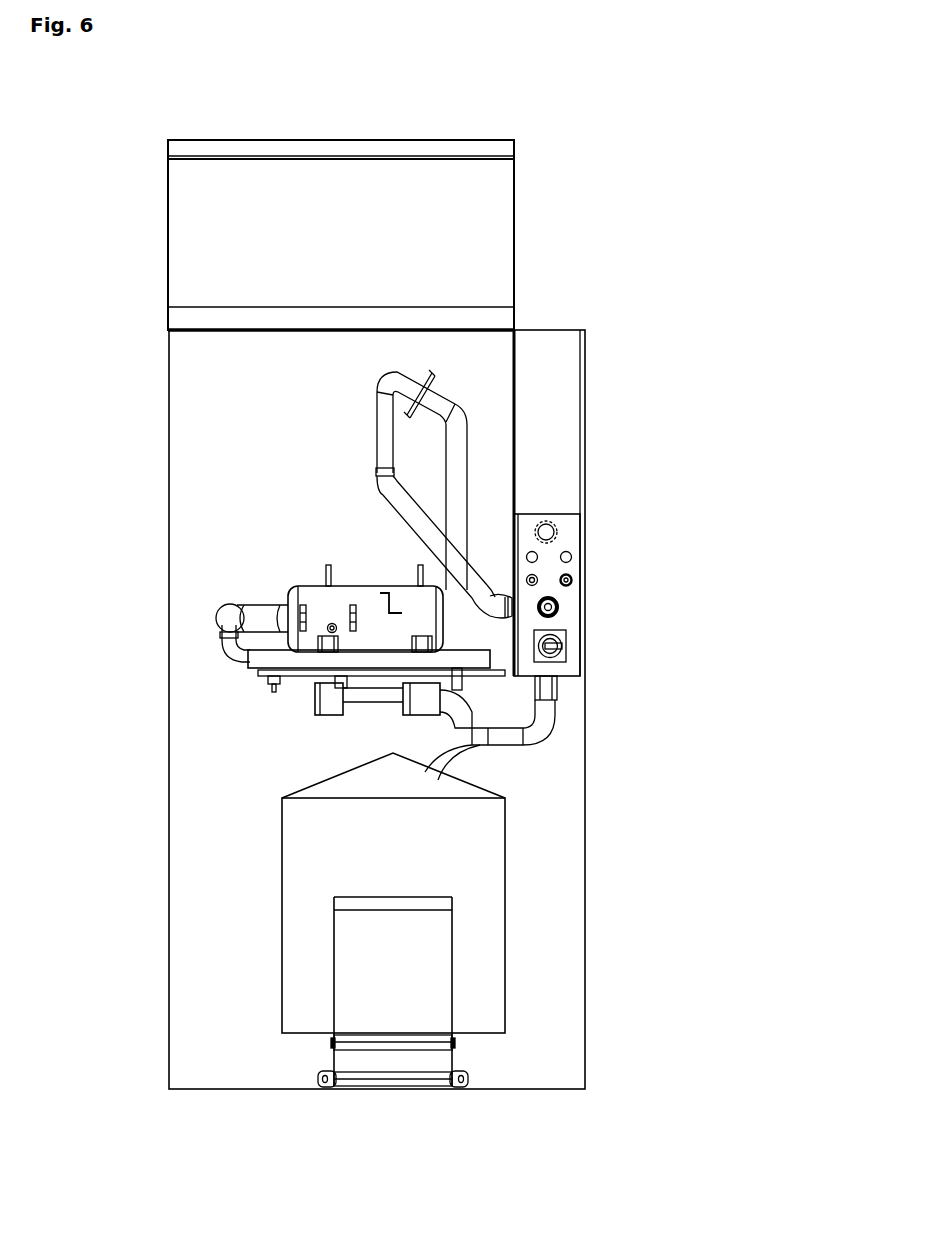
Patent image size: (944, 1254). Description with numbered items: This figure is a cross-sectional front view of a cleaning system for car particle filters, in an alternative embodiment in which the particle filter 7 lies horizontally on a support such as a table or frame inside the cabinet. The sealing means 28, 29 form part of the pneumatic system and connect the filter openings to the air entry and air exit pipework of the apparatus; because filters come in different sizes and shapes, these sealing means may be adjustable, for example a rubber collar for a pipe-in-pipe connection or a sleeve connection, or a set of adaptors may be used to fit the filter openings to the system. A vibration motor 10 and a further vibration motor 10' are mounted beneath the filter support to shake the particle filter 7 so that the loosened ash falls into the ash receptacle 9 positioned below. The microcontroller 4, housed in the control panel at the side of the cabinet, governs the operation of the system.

The microcontroller 4 is at (560, 538).
The particle filter 7 is at (318, 604).
The ash receptacle 9 is at (455, 873).
The vibration motor 10 is at (218, 719).
The support 10' is at (322, 784).
The sealing means 28 is at (215, 641).
The sealing means 29 is at (440, 378).